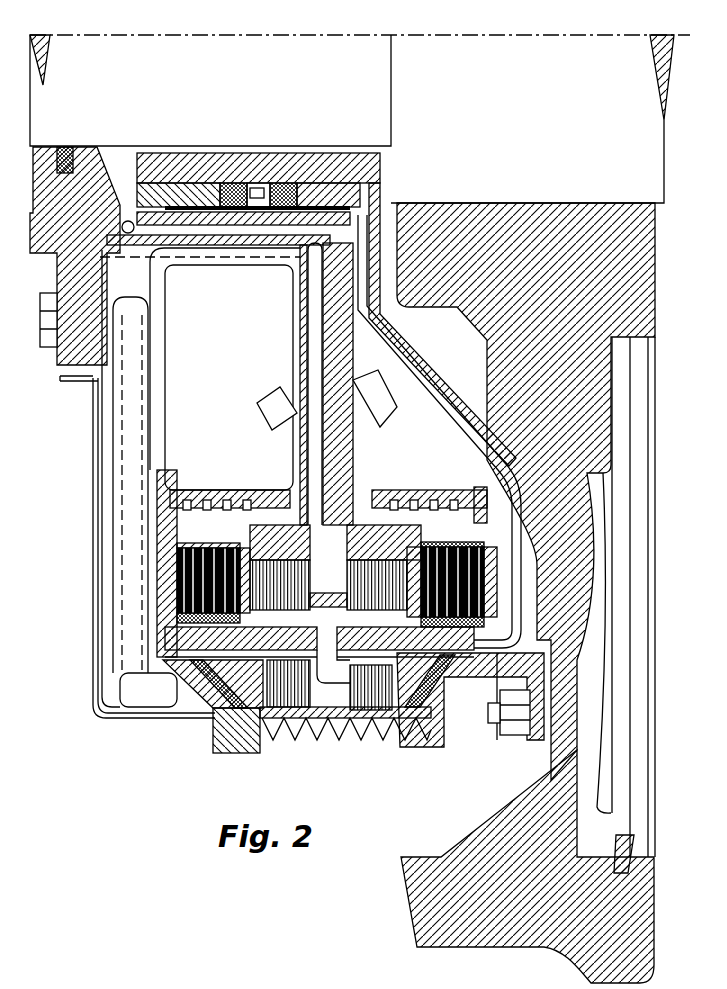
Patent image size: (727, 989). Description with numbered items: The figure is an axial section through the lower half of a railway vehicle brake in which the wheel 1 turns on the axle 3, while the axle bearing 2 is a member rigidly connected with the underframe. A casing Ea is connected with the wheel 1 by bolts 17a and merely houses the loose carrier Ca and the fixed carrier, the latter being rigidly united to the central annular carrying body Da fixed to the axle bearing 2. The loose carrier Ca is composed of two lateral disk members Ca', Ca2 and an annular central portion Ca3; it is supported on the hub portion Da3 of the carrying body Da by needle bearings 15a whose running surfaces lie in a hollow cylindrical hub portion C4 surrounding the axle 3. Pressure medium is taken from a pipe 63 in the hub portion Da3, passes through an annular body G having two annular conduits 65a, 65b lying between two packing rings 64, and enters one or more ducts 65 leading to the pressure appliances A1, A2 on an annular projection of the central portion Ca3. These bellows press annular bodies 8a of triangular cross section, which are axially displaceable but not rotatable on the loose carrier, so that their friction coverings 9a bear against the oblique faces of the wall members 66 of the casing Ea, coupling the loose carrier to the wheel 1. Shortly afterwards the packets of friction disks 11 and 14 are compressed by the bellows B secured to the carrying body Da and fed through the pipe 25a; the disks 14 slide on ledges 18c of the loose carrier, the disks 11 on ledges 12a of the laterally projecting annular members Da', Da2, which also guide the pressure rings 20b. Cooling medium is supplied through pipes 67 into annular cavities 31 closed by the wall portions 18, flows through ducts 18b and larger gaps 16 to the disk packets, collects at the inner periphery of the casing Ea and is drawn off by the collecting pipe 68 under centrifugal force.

The wheel 1 is at (490, 812).
The axle bearing 2 is at (57, 350).
The axle 3 is at (512, 75).
The annular body 8a is at (230, 753).
The annular friction covering 9a is at (203, 723).
The friction disk 11 is at (195, 550).
The ledge 12a is at (235, 550).
The friction disk 14 is at (177, 619).
The needle bearing 15a is at (180, 192).
The gap 16 is at (195, 533).
The bolt 17a is at (504, 735).
The wall portion 18 is at (217, 490).
The duct 18b is at (192, 493).
The ledge 18c is at (287, 742).
The pressure ring 20b is at (173, 587).
The pipe 25a is at (330, 373).
The annular cavity 31 is at (222, 490).
The pipe 63 is at (190, 234).
The packing ring 64 is at (240, 205).
The duct 65 is at (384, 152).
The annular conduit 65a is at (262, 216).
The annular conduit 65b is at (247, 226).
The wall member 66 is at (177, 703).
The pipe 67 is at (272, 403).
The collecting pipe 68 is at (127, 517).
The pressure appliance A1 is at (263, 742).
The pressure appliance A2 is at (370, 742).
The pressure appliance B is at (328, 585).
The hollow cylindrical hub portion C4 is at (212, 160).
The loose carrier Ca is at (206, 718).
The lateral disk member Ca' is at (111, 478).
The lateral disk member Ca2 is at (521, 563).
The annular central portion Ca3 is at (333, 742).
The carrying body Da is at (294, 384).
The annular member Da' is at (121, 553).
The annular member Da2 is at (454, 503).
The hub portion Da3 is at (258, 212).
The casing Ea is at (100, 719).
The annular body G is at (282, 212).